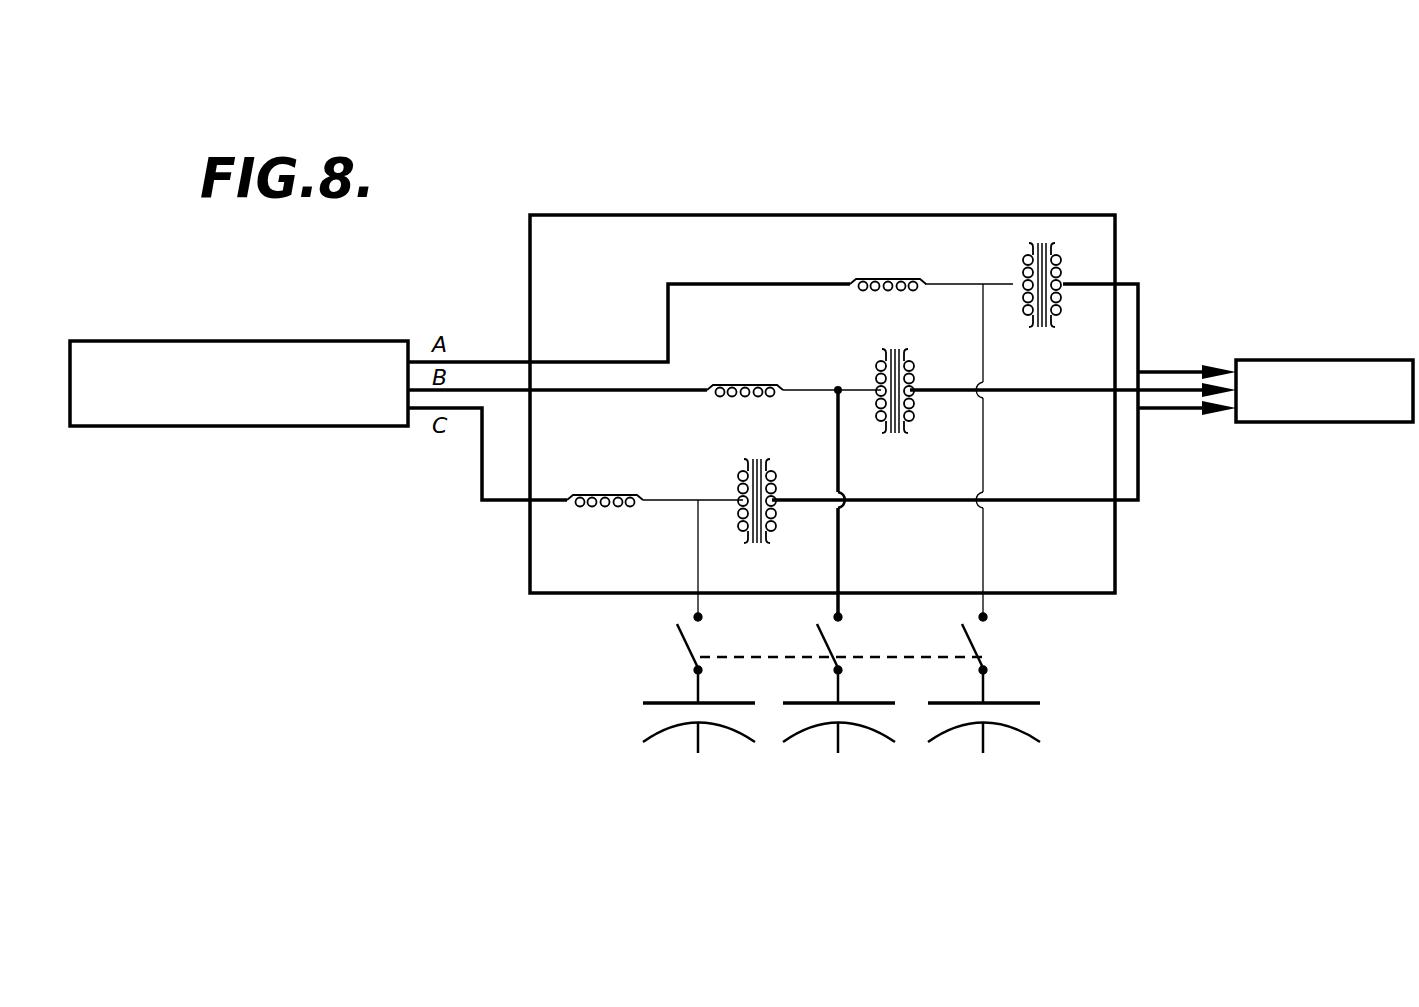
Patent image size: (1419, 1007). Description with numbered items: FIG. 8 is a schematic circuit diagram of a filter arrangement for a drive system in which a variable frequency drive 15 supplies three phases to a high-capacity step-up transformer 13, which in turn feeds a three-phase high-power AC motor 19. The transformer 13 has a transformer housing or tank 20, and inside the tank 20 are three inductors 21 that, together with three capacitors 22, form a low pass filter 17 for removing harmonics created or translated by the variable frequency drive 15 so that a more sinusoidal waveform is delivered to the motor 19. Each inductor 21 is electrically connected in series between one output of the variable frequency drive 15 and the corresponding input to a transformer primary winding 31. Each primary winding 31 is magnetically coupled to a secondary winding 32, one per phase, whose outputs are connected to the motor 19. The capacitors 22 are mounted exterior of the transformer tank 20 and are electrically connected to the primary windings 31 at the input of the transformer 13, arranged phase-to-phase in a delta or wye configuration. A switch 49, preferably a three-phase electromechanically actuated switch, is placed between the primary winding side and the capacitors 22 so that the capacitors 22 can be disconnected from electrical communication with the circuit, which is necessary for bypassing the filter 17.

The step-up transformer 13 is at (1017, 193).
The variable frequency drive 15 is at (303, 338).
The low pass filter 17 is at (483, 573).
The AC motor 19 is at (1290, 423).
The transformer tank 20 is at (604, 215).
The inductor 21 is at (898, 281).
The capacitor 22 is at (643, 722).
The primary winding 31 is at (1030, 327).
The secondary winding 32 is at (1053, 327).
The switch 49 is at (683, 648).